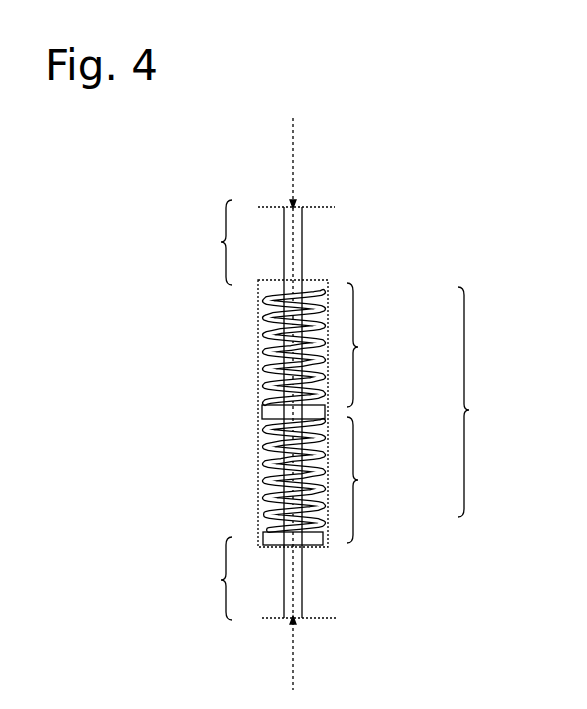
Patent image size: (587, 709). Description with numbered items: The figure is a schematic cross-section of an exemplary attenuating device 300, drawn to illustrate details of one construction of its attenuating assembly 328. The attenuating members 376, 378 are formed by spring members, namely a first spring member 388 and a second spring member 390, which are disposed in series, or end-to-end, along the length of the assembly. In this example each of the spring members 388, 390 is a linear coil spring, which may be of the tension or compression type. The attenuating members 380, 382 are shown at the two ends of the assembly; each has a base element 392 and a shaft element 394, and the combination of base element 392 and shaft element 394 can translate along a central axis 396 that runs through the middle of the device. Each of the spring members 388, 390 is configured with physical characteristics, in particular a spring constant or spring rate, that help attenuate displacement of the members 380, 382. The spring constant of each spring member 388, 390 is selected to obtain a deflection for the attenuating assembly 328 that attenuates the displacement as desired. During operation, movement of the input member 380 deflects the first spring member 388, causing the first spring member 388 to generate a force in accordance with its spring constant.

The attenuating device 300 is at (392, 170).
The attenuating assembly 328 is at (490, 402).
The attenuating member 376 is at (378, 480).
The attenuating member 378 is at (378, 345).
The input member 380 is at (201, 578).
The attenuating member 382 is at (201, 242).
The first spring member 388 is at (263, 483).
The second spring member 390 is at (265, 353).
The base element 392 is at (260, 418).
The shaft element 394 is at (298, 238).
The central axis 396 is at (293, 143).